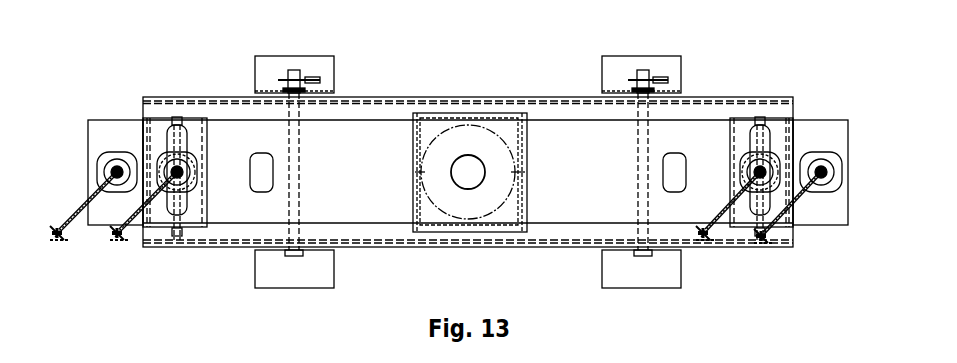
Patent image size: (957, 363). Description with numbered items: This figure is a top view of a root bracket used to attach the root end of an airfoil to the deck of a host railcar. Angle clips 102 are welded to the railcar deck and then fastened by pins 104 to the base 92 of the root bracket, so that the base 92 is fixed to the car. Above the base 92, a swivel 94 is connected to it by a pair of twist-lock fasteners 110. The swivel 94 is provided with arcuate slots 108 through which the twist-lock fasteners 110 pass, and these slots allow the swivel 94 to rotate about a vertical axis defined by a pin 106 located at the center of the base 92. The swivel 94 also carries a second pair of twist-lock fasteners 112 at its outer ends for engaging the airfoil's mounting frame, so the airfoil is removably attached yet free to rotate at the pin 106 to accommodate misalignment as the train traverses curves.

The base 92 is at (180, 97).
The swivel 94 is at (115, 121).
The angle clips 102 is at (280, 56).
The pin 104 is at (300, 72).
The pin 106 is at (465, 155).
The arcuate slots 108 is at (187, 208).
The twist-lock fasteners 110 is at (115, 240).
The outer arm assembly 112 is at (53, 237).